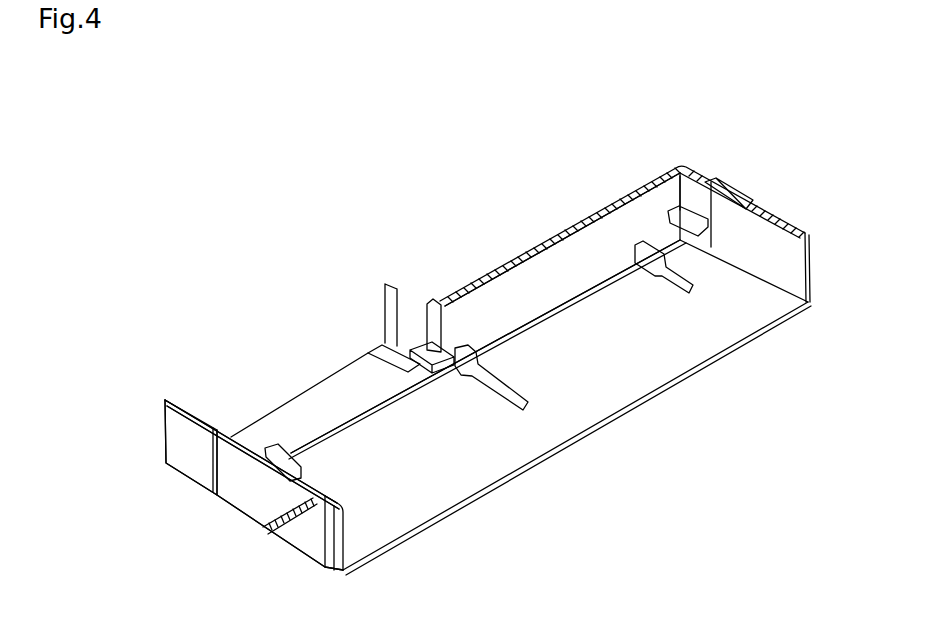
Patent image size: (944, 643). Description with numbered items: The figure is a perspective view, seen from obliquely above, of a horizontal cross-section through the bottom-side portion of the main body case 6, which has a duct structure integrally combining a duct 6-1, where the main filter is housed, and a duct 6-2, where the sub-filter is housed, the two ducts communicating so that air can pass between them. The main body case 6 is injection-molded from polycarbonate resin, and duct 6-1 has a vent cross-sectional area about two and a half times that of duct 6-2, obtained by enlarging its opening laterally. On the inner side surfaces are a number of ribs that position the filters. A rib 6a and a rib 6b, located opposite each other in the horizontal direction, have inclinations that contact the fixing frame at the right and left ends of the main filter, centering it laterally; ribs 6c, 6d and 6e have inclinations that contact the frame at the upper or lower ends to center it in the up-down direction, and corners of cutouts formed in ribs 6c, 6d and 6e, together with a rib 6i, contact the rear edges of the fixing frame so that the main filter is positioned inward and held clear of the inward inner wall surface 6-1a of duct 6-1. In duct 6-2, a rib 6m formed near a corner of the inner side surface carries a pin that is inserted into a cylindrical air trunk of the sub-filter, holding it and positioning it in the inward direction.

The main body case 6 is at (474, 323).
The duct 6-1 is at (338, 607).
The duct 6-2 is at (216, 527).
The inward inner wall surface 6-1a is at (569, 262).
The rib 6a is at (386, 338).
The rib 6b is at (230, 430).
The rib 6c is at (503, 393).
The rib 6d is at (680, 297).
The rib 6e is at (303, 470).
The rib 6i is at (692, 212).
The rib 6m is at (430, 353).